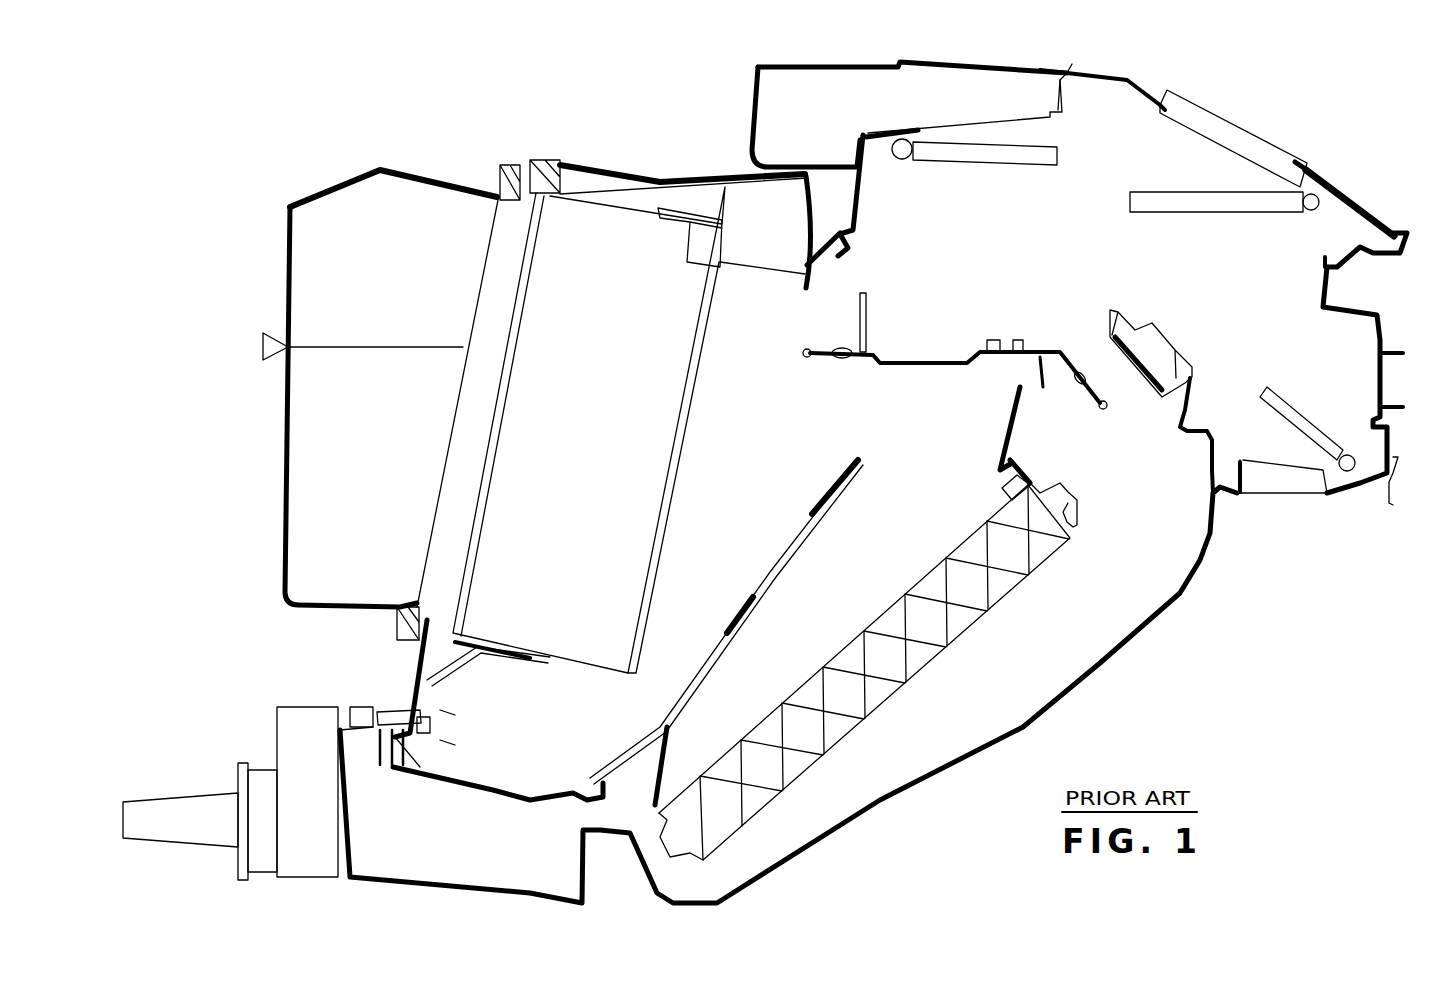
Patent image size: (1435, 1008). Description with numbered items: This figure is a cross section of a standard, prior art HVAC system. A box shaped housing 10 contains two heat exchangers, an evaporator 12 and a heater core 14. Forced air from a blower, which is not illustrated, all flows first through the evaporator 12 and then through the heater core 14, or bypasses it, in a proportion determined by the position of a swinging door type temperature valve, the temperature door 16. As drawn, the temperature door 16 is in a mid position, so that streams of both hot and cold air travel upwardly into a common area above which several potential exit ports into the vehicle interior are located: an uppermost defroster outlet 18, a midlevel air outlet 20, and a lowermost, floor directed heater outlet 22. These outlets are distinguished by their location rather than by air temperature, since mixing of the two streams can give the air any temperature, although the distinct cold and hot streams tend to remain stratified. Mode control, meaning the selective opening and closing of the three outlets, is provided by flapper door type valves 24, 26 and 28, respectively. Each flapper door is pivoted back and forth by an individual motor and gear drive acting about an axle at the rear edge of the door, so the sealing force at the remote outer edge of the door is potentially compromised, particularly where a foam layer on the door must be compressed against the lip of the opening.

The housing 10 is at (755, 108).
The evaporator 12 is at (611, 445).
The heater core 14 is at (925, 577).
The temperature door 16 is at (945, 360).
The defroster outlet 18 is at (1052, 90).
The air outlet 20 is at (1300, 170).
The heater outlet 22 is at (1318, 480).
The flapper door 24 is at (958, 145).
The flapper door 26 is at (1230, 195).
The flapper door 28 is at (1293, 430).